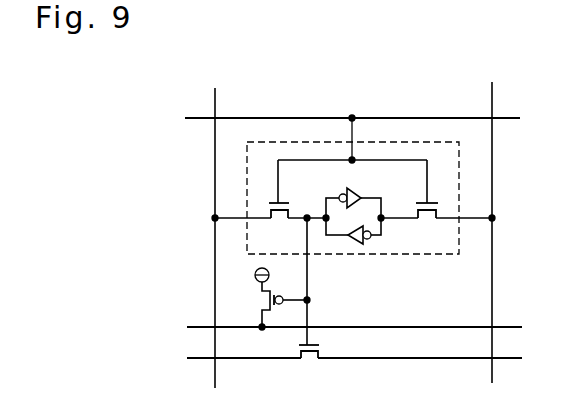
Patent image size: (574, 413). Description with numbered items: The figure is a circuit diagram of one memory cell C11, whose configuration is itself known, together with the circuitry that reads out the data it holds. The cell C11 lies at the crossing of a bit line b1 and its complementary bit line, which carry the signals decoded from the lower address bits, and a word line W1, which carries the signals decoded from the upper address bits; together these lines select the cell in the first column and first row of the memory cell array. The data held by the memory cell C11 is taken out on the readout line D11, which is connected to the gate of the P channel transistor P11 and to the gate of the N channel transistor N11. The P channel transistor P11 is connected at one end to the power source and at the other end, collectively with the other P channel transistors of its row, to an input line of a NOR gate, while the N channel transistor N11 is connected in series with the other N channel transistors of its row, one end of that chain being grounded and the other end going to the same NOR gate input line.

The bit line b1 is at (507, 52).
The word line W1 is at (338, 119).
The memory cell C11 is at (438, 245).
The readout line D11 is at (307, 283).
The P channel transistor P11 is at (266, 300).
The N channel transistor N11 is at (312, 359).